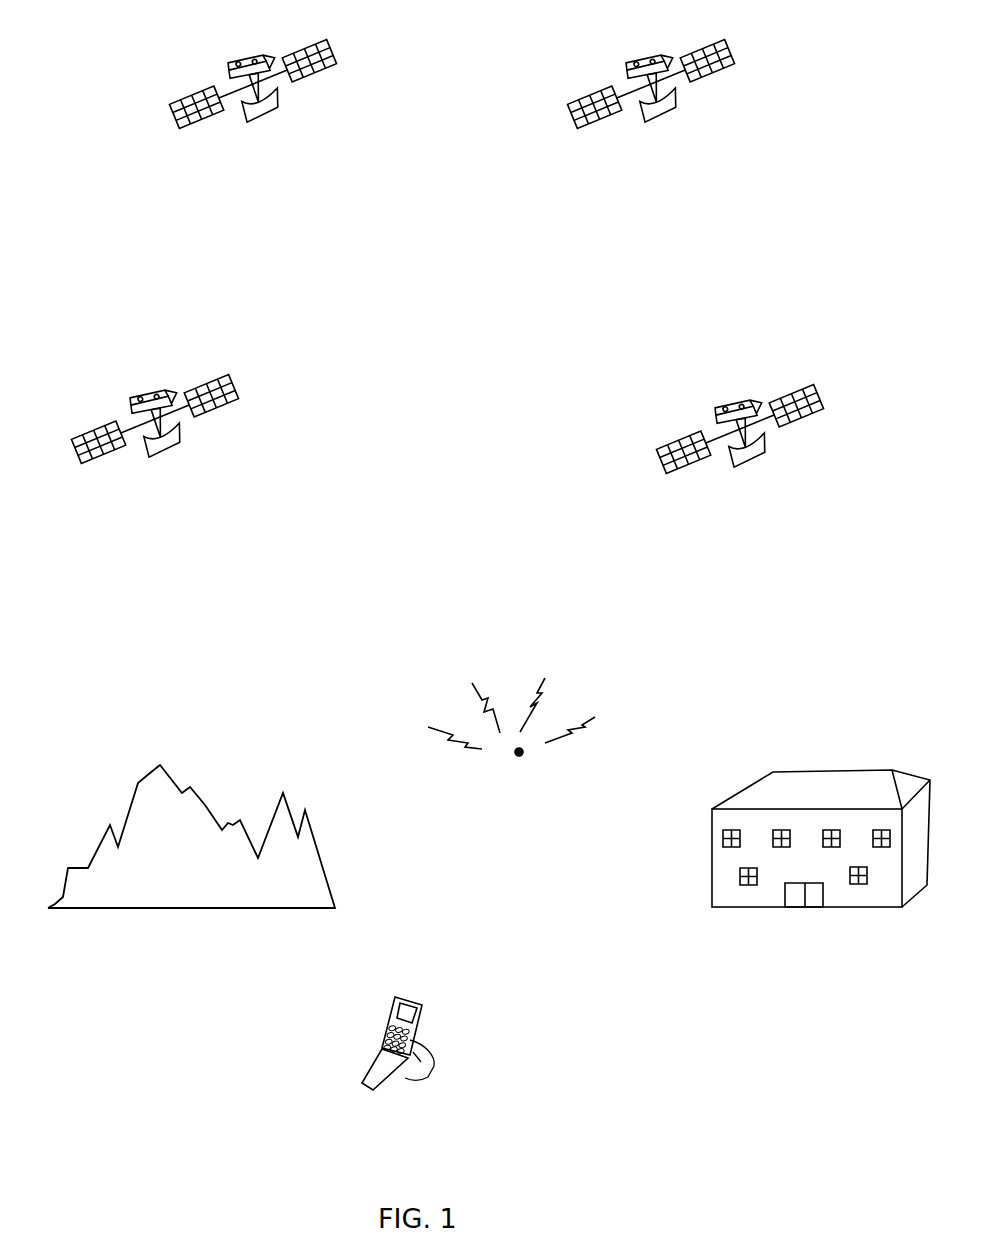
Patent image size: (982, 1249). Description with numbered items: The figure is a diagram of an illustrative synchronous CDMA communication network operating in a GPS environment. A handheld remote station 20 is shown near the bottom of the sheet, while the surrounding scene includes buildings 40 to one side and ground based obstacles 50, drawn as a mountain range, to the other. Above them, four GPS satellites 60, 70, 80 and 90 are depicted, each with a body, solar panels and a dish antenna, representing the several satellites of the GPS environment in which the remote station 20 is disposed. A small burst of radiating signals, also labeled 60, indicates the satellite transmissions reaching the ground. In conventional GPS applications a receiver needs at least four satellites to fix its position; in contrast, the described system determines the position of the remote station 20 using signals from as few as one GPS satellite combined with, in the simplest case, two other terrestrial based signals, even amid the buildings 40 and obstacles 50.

The remote station 20 is at (417, 998).
The buildings 40 is at (828, 772).
The ground based obstacles 50 is at (318, 840).
The GPS satellite 60 is at (213, 373).
The GPS satellite 70 is at (308, 42).
The GPS satellite 80 is at (708, 42).
The GPS satellite 90 is at (802, 382).